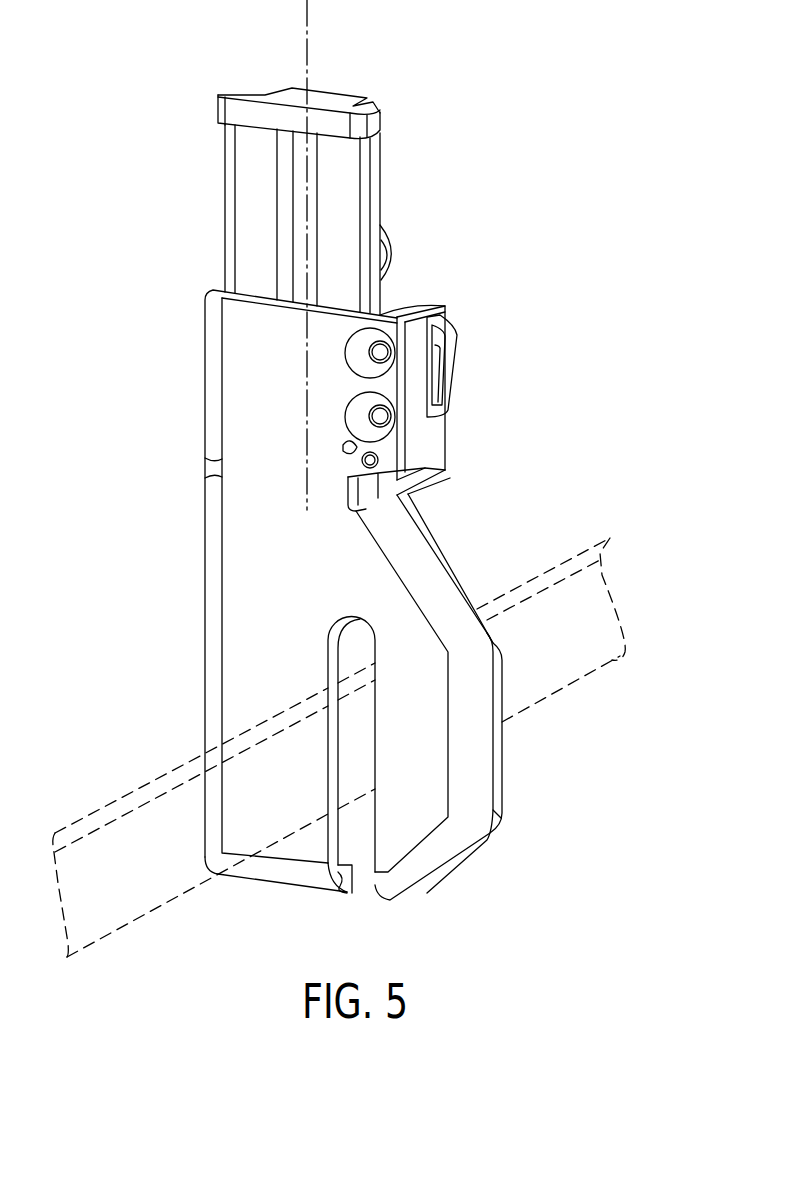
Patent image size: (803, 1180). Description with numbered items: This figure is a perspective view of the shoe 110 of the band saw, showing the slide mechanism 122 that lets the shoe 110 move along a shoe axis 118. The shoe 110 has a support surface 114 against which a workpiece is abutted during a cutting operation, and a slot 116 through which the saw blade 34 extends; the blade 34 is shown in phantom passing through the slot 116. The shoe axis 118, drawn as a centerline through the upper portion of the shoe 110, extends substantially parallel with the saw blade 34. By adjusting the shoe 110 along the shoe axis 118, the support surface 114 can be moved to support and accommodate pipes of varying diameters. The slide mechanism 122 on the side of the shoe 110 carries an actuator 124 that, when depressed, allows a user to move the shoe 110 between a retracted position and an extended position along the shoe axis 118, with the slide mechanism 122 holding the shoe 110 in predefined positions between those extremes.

The band saw blade 34 is at (137, 890).
The shoe 110 is at (423, 522).
The support surface 114 is at (290, 691).
The slot 116 is at (343, 887).
The shoe axis 118 is at (308, 43).
The slide mechanism 122 is at (500, 422).
The actuator 124 is at (458, 347).